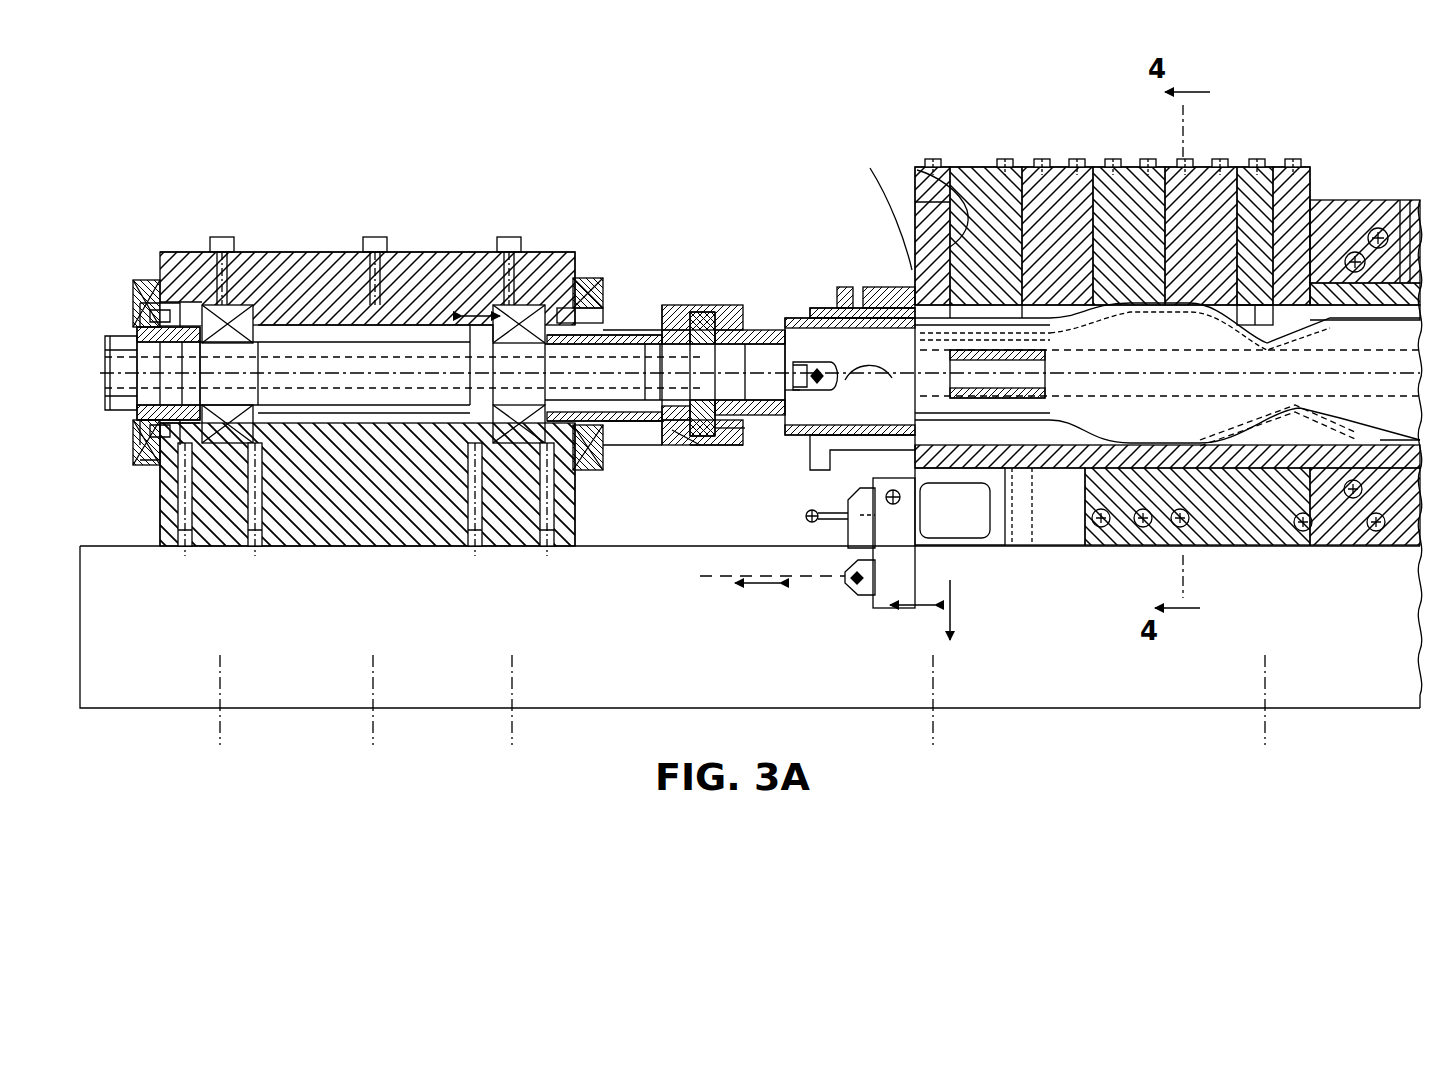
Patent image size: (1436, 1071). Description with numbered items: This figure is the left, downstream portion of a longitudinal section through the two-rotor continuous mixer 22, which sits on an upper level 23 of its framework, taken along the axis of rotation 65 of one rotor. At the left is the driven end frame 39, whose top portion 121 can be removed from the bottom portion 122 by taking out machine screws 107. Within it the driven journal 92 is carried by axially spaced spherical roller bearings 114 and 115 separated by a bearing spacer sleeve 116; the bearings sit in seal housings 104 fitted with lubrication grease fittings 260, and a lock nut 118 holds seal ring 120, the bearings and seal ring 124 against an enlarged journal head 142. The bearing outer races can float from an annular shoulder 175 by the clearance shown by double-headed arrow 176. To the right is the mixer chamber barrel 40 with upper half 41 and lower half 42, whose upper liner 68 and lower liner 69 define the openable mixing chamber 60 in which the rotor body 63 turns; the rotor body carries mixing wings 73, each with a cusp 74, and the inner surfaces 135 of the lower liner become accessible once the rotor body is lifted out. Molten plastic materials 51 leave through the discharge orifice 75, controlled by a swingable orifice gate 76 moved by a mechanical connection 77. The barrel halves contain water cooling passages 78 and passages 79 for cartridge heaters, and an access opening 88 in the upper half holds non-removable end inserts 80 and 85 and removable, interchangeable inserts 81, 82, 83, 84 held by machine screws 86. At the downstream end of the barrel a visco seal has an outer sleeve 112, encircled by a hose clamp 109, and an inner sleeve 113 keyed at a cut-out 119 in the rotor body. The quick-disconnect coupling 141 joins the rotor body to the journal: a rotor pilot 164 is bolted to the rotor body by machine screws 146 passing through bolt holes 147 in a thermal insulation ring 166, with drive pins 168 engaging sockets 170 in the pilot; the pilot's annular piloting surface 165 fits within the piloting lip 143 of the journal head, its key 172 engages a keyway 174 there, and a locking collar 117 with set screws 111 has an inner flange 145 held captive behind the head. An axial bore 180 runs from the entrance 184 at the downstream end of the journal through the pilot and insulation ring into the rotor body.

The two-rotor continuous mixer 22 is at (283, 85).
The upper level 23 is at (612, 657).
The driven end frame 39 is at (258, 245).
The mixer chamber barrel 40 is at (912, 235).
The upper half 41 is at (1368, 148).
The lower half 42 is at (1265, 548).
The molten plastic materials 51 is at (955, 615).
The openable mixing chamber 60 is at (1332, 548).
The first rotor body 63 is at (1167, 373).
The axis of rotation 65 is at (456, 378).
The upper liner 68 is at (878, 288).
The lower liner 69 is at (1070, 470).
The mixing wings 73 is at (1245, 330).
The cusp 74 is at (1292, 408).
The discharge orifice 75 is at (980, 470).
The swingable orifice gate 76 is at (880, 580).
The mechanical connection 77 is at (718, 580).
The water cooling passages 78 is at (1348, 255).
The passages for cartridge heaters 79 is at (1380, 235).
The non-removable end insert 80 is at (958, 175).
The removable insert 81 is at (1062, 175).
The removable insert 82 is at (1128, 178).
The removable insert 83 is at (1200, 178).
The removable insert 84 is at (1268, 178).
The non-removable end insert 85 is at (1310, 200).
The machine screws 86 is at (1005, 160).
The access opening 88 is at (928, 195).
The driven journal 92 is at (303, 377).
The seal housings 104 is at (150, 292).
The machine screws 107 is at (222, 237).
The hose clamp 109 is at (760, 300).
The set screws 111 is at (705, 480).
The visco seal outer sleeve 112 is at (838, 290).
The visco seal inner sleeve 113 is at (800, 455).
The spherical roller bearing 114 is at (527, 318).
The spherical roller bearing 115 is at (245, 318).
The bearing spacer sleeve 116 is at (398, 335).
The locking collar 117 is at (698, 302).
The lock nut 118 is at (122, 338).
The cut-out 119 is at (877, 383).
The seal ring 120 is at (148, 462).
The top portion 121 is at (477, 285).
The bottom portion 122 is at (378, 548).
The seal ring 124 is at (620, 420).
The inner surfaces 135 is at (1350, 445).
The quick-disconnect coupling 141 is at (697, 200).
The enlarged journal head 142 is at (680, 445).
The piloting lip 143 is at (716, 445).
The inner flange 145 is at (662, 328).
The machine screws 146 is at (645, 440).
The bolt holes 147 is at (782, 400).
The rotor pilot 164 is at (745, 335).
The annular piloting surface 165 is at (732, 428).
The thermal insulation ring 166 is at (762, 332).
The torque-transmitting drive pins 168 is at (830, 348).
The sockets 170 is at (787, 340).
The key 172 is at (604, 378).
The keyway 174 is at (645, 373).
The annular shoulder 175 is at (518, 374).
The double-headed arrow 176 is at (492, 276).
The axial bore 180 is at (300, 392).
The entrance 184 is at (118, 368).
The lubrication grease fittings 260 is at (138, 540).